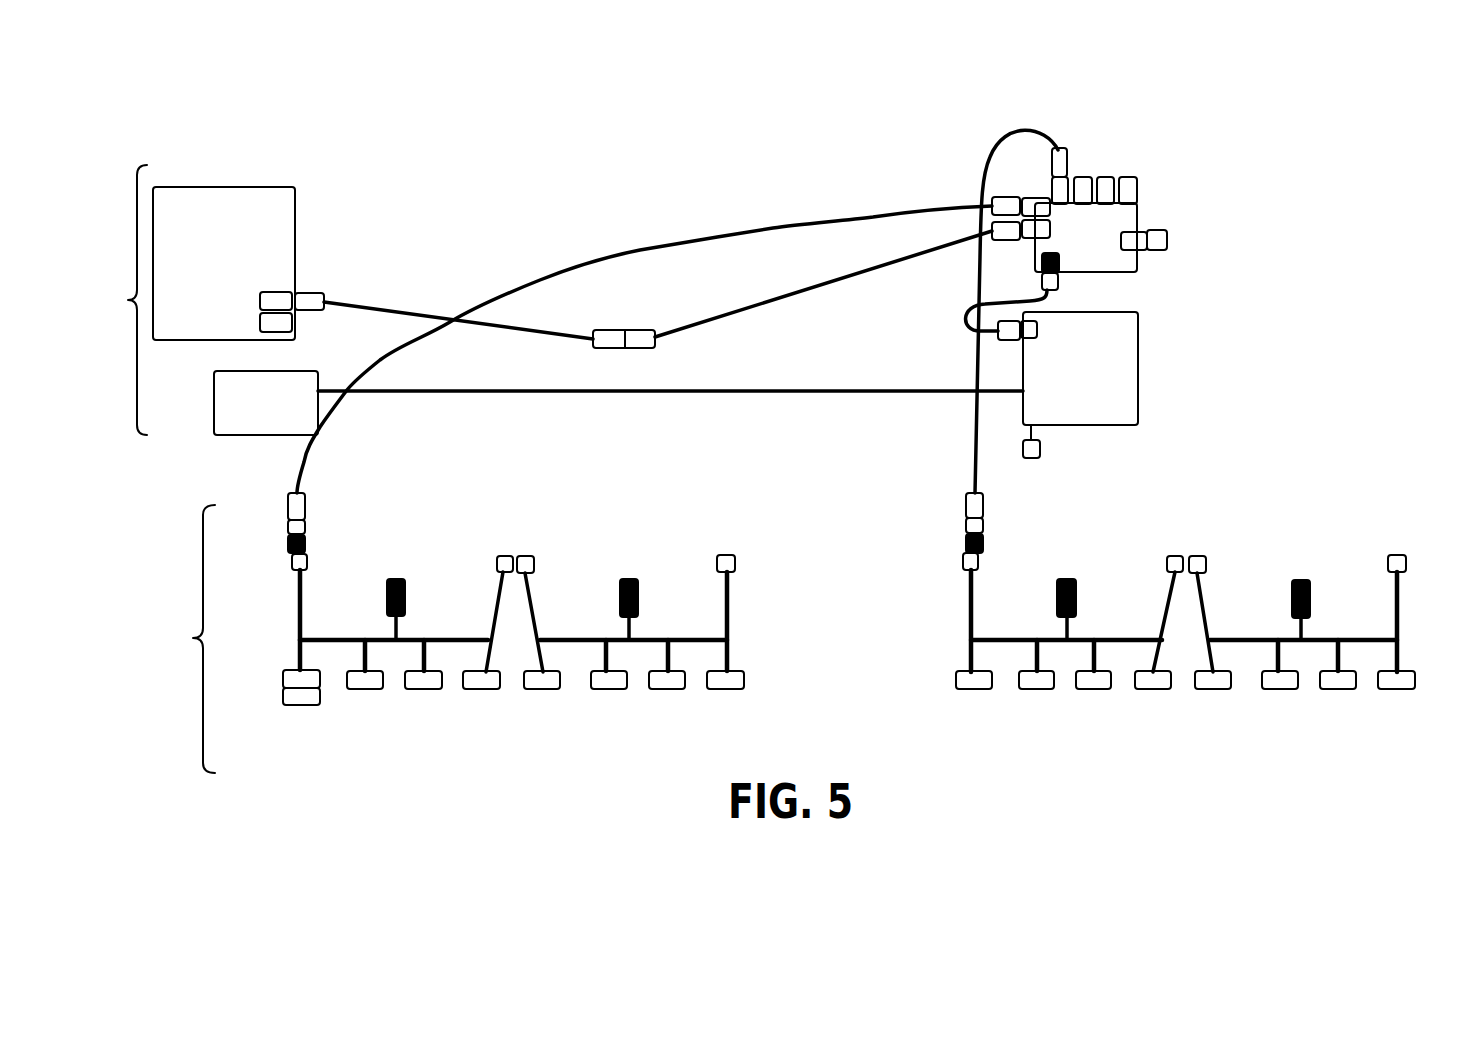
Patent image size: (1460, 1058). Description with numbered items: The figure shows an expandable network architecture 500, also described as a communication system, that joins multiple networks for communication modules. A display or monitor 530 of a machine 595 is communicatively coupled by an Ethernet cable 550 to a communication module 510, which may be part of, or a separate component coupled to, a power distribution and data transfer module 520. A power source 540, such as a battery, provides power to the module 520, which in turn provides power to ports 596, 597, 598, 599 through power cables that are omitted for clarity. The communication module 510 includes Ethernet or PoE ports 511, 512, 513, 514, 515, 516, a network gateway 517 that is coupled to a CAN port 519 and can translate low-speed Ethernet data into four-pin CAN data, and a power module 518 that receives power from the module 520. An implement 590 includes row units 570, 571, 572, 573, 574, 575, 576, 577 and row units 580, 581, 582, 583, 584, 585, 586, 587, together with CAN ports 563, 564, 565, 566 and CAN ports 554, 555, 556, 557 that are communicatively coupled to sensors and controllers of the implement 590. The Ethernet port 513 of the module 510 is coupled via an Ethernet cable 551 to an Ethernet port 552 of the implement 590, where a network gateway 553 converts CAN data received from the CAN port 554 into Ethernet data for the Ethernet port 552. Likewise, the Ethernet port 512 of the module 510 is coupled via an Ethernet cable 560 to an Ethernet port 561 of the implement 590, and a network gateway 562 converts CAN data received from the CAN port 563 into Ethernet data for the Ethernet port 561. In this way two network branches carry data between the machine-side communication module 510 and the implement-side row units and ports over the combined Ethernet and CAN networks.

The expandable network architecture 500 is at (790, 72).
The communication module 510 is at (1139, 213).
The Ethernet or PoE port 511 is at (1030, 237).
The Ethernet port 512 is at (1032, 205).
The Ethernet port 513 is at (1057, 190).
The Ethernet or PoE port 514 is at (1083, 183).
The Ethernet or PoE port 515 is at (1107, 183).
The Ethernet or PoE port 516 is at (1130, 183).
The network gateway 517 is at (1060, 262).
The power module 518 is at (1140, 232).
The CAN port 519 is at (1043, 283).
The power distribution and data transfer module 520 is at (1138, 325).
The display or monitor 530 is at (296, 233).
The power source 540 is at (255, 436).
The Ethernet cable 550 is at (757, 303).
The Ethernet cable 551 is at (968, 308).
The Ethernet port 552 is at (983, 506).
The network gateway 553 is at (983, 544).
The CAN port 554 is at (978, 562).
The CAN port 555 is at (1175, 556).
The CAN port 556 is at (1198, 556).
The CAN port 557 is at (1398, 555).
The Ethernet cable 560 is at (678, 242).
The Ethernet port 561 is at (305, 505).
The network gateway 562 is at (305, 543).
The CAN port 563 is at (307, 561).
The CAN port 564 is at (504, 556).
The CAN port 565 is at (528, 556).
The CAN port 566 is at (728, 555).
The row unit 570 is at (283, 680).
The row unit 571 is at (369, 689).
The row unit 572 is at (427, 689).
The row unit 573 is at (485, 689).
The row unit 574 is at (547, 689).
The row unit 575 is at (617, 689).
The row unit 576 is at (675, 689).
The row unit 577 is at (735, 689).
The row unit 580 is at (972, 689).
The row unit 581 is at (1039, 689).
The row unit 582 is at (1099, 689).
The row unit 583 is at (1155, 689).
The row unit 584 is at (1218, 689).
The row unit 585 is at (1287, 689).
The row unit 586 is at (1345, 689).
The row unit 587 is at (1404, 689).
The implement 590 is at (774, 639).
The machine 595 is at (117, 300).
The port 596 is at (405, 587).
The port 597 is at (638, 596).
The port 598 is at (1076, 596).
The port 599 is at (1310, 596).